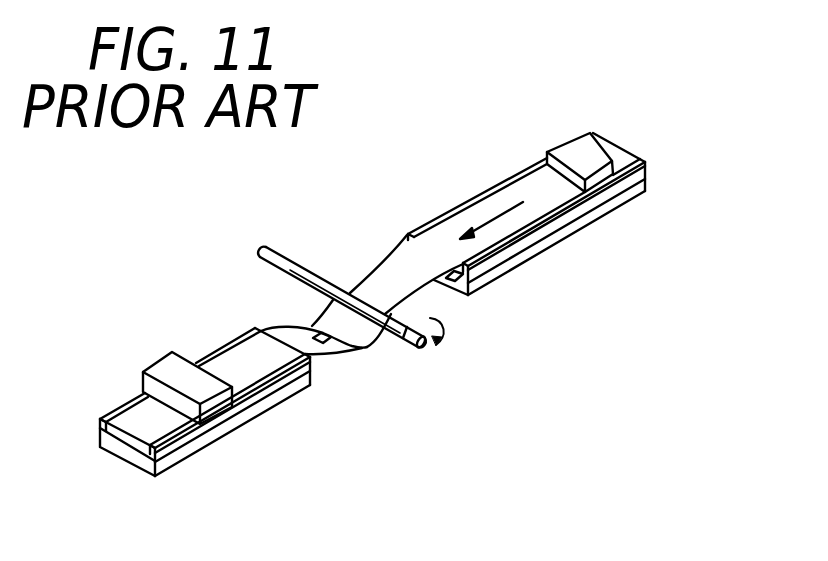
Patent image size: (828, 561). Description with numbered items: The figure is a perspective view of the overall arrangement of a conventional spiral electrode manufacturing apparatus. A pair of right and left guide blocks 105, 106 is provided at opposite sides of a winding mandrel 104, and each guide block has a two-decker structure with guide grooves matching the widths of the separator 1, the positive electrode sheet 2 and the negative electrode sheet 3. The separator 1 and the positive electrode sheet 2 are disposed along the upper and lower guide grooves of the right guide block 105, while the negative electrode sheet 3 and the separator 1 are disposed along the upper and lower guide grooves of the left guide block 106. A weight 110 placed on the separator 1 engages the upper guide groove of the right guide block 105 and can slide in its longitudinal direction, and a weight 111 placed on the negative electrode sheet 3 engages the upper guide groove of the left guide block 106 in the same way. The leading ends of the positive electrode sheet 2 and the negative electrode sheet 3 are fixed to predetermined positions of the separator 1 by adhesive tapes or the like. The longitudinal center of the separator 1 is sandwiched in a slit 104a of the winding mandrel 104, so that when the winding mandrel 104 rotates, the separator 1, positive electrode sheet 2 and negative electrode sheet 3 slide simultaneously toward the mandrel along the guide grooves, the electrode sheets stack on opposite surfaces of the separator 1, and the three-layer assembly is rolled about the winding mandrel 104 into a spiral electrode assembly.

The separator 1 is at (362, 262).
The positive electrode sheet 2 is at (435, 283).
The negative electrode sheet 3 is at (268, 337).
The winding mandrel 104 is at (283, 248).
The slit 104a is at (421, 344).
The right guide block 105 is at (647, 161).
The left guide block 106 is at (170, 462).
The weight 110 is at (565, 148).
The weight 111 is at (163, 366).